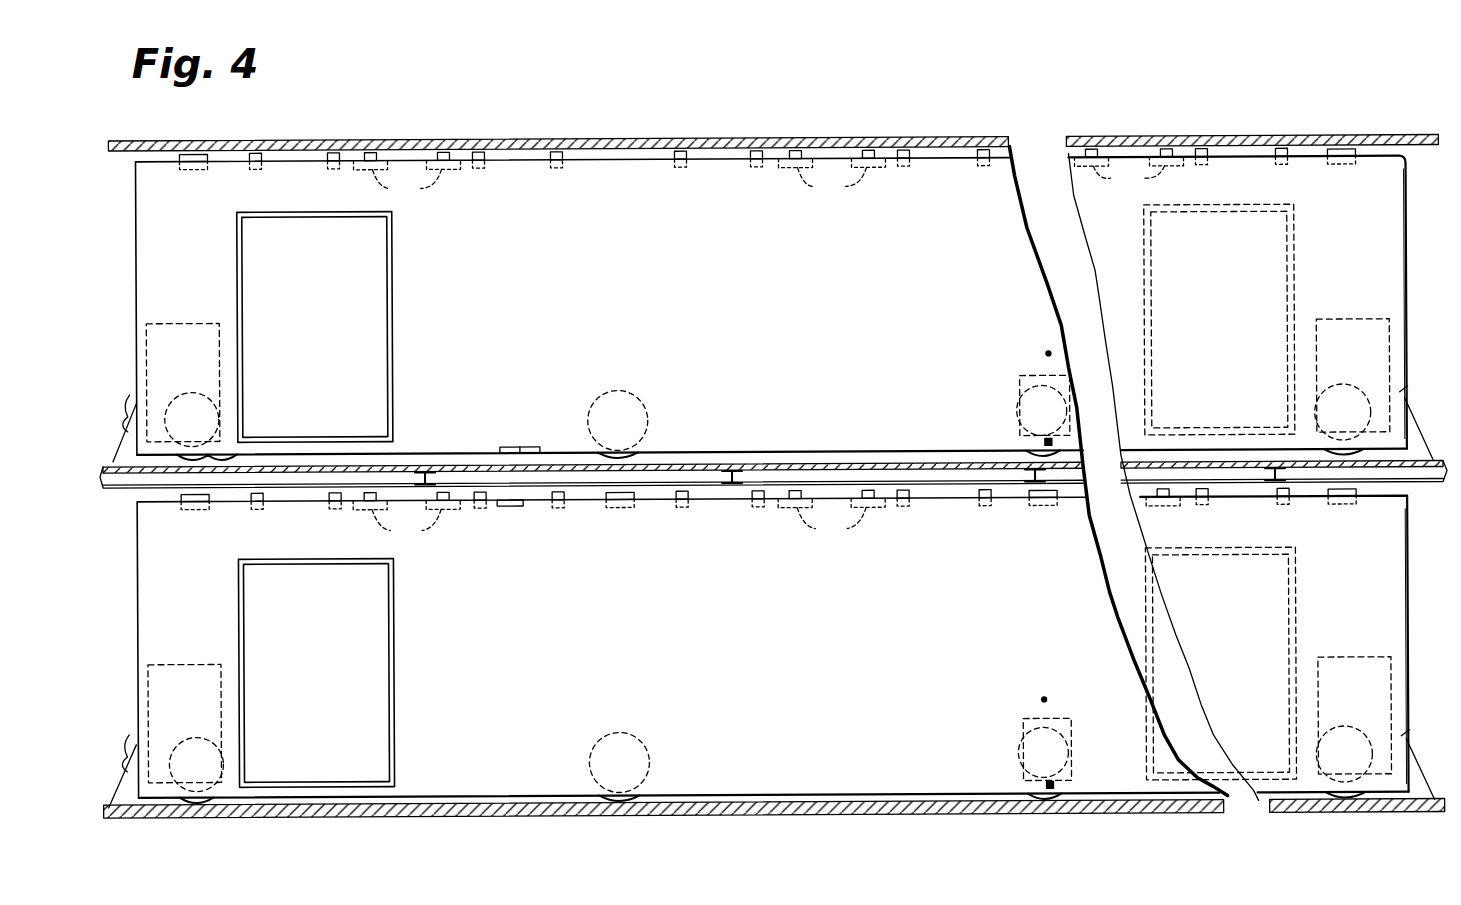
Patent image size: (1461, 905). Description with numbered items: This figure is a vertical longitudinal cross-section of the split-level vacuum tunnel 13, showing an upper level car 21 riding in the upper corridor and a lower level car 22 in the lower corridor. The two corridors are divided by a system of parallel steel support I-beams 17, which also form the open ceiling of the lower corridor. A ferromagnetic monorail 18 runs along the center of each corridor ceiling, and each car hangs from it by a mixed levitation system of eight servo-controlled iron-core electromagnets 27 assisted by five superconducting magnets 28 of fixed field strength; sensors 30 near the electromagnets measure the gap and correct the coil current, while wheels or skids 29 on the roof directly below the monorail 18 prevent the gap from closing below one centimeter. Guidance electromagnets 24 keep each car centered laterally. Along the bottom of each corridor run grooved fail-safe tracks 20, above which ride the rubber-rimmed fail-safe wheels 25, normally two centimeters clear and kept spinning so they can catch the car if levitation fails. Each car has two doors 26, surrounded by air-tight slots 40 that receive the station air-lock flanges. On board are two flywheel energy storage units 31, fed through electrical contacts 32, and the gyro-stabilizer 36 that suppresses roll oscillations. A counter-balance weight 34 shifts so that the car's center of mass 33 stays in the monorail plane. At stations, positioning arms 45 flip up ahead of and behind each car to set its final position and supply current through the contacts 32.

The vacuum tunnel 13 is at (1400, 140).
The support I-beams 17 is at (437, 486).
The ferromagnetic monorail 18 is at (1412, 152).
The fail-safe tracks 20 is at (805, 455).
The upper level car 21 is at (1408, 270).
The lower level car 22 is at (1409, 560).
The guidance electromagnets 24 is at (510, 436).
The fail-safe wheels 25 is at (245, 455).
The car doors 26 is at (383, 255).
The iron-core electromagnets 27 is at (1160, 505).
The superconducting magnets 28 is at (196, 155).
The wheels or skids 29 is at (558, 155).
The sensors 30 is at (337, 155).
The flywheel energy storage units 31 is at (150, 348).
The electrical contacts 32 is at (135, 398).
The center of mass 33 is at (1049, 358).
The counter-balance weight 34 is at (1045, 447).
The gyro-stabilizer 36 is at (1070, 400).
The air-tight slots 40 is at (395, 277).
The positioning arms 45 is at (1445, 420).